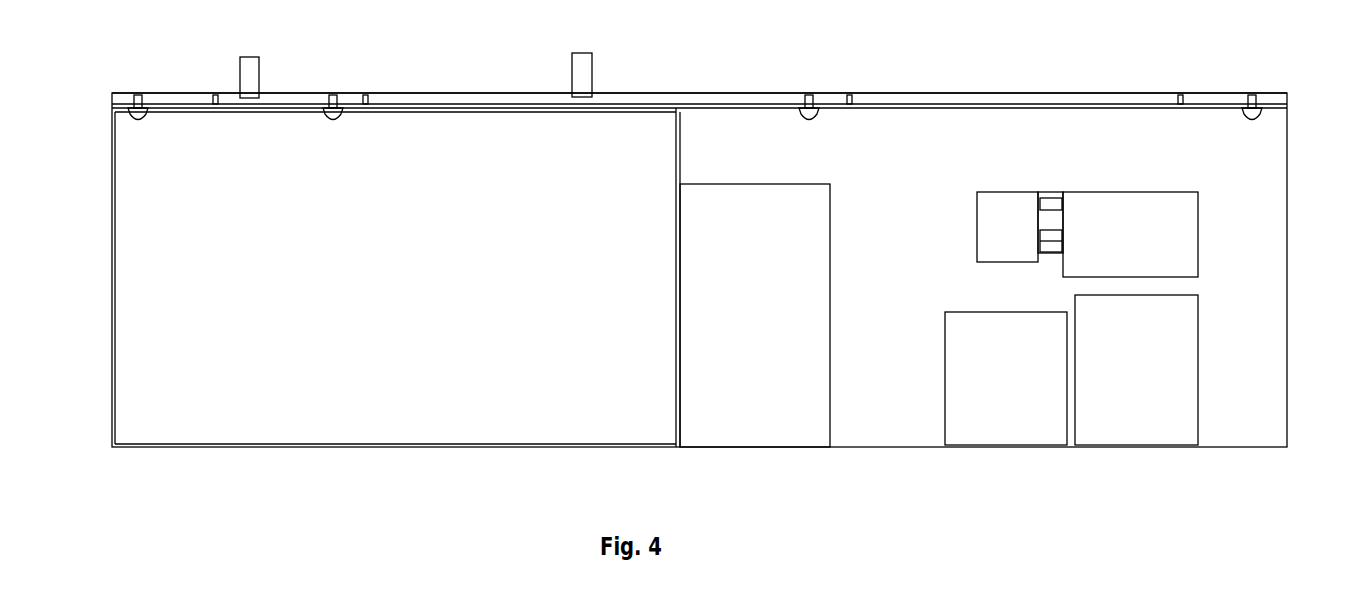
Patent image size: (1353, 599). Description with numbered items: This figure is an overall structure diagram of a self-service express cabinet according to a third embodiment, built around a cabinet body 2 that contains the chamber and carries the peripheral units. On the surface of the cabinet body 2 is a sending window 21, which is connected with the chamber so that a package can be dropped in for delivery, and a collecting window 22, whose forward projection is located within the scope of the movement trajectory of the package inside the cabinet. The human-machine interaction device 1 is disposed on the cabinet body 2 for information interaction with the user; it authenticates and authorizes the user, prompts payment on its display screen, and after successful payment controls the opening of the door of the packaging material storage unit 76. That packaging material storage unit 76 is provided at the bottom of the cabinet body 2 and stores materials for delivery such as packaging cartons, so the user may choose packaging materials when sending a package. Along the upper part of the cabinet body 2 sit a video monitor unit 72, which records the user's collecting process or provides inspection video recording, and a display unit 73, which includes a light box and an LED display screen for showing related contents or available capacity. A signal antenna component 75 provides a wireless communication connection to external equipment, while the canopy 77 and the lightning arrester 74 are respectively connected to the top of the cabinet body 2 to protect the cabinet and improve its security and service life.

The human-machine interaction device 1 is at (977, 242).
The cabinet body 2 is at (1288, 280).
The sending window 21 is at (1198, 237).
The collecting window 22 is at (745, 437).
The video monitor unit 72 is at (143, 104).
The display unit 73 is at (150, 365).
The lightning arrester 74 is at (585, 72).
The signal antenna component 75 is at (247, 88).
The packaging material storage unit 76 is at (1022, 422).
The canopy 77 is at (512, 97).